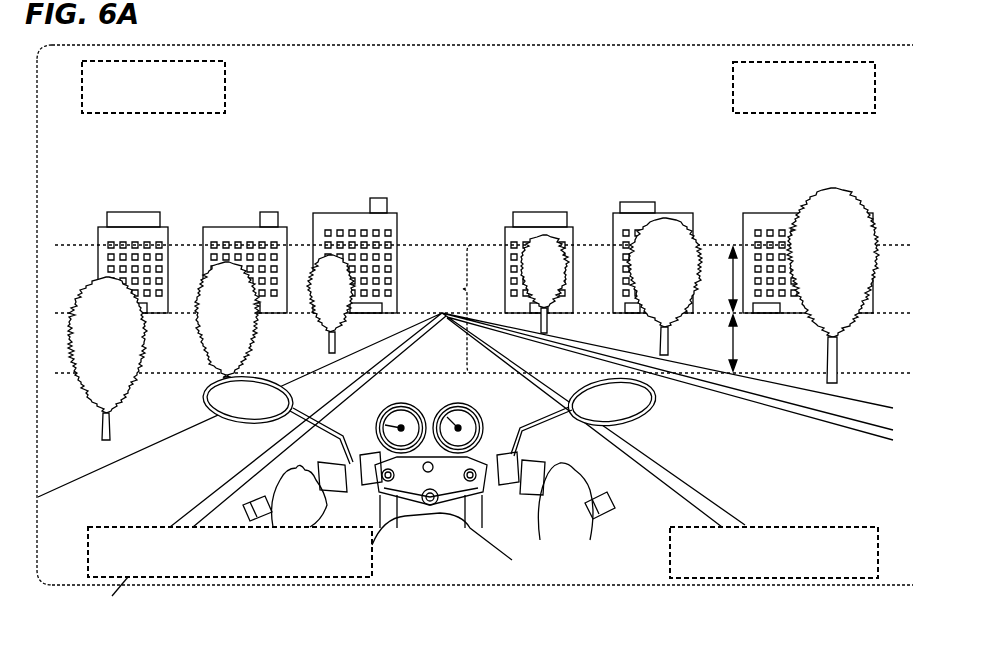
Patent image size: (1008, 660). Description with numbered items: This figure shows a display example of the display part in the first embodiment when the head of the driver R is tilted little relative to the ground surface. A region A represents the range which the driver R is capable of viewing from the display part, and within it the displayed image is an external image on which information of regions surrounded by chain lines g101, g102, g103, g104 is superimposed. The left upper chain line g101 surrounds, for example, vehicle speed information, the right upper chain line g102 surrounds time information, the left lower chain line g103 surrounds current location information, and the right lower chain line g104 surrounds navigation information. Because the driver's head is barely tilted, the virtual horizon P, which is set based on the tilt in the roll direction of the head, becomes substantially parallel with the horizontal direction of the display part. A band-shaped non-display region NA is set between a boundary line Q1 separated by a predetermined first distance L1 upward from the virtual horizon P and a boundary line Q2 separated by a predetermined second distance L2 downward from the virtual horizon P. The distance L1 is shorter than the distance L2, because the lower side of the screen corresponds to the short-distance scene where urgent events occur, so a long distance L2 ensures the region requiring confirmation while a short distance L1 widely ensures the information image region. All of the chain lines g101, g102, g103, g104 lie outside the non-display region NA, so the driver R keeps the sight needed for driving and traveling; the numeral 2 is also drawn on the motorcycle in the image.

The region A is at (37, 276).
The chain line g101 is at (228, 89).
The chain line g102 is at (732, 90).
The chain line g103 is at (132, 527).
The chain line g104 is at (837, 527).
The boundary line Q1 is at (711, 240).
The boundary line Q2 is at (893, 372).
The virtual horizon P is at (600, 311).
The distance L1 is at (719, 279).
The distance L2 is at (751, 343).
The non-display region NA is at (447, 309).
The driver R is at (584, 541).
The motorcycle 2 is at (457, 550).